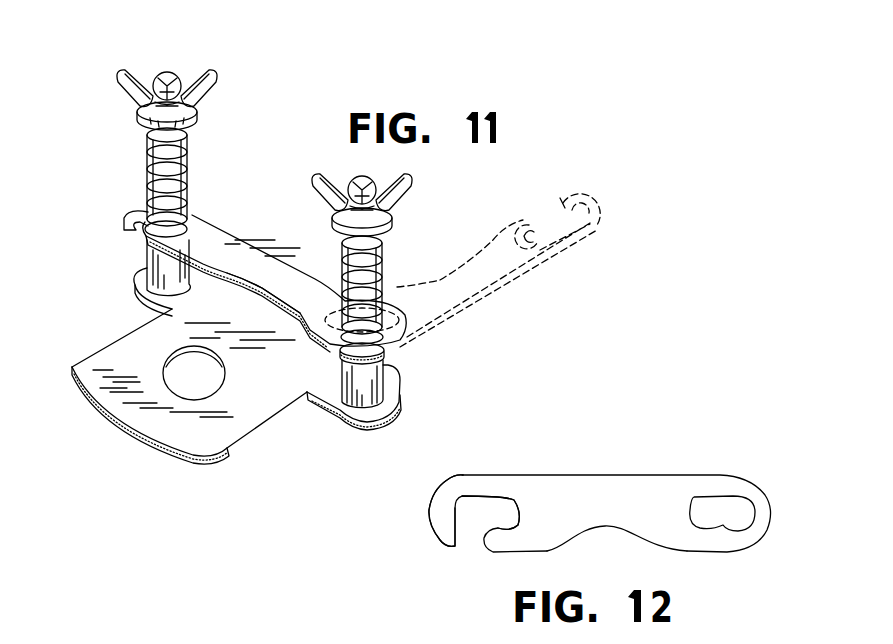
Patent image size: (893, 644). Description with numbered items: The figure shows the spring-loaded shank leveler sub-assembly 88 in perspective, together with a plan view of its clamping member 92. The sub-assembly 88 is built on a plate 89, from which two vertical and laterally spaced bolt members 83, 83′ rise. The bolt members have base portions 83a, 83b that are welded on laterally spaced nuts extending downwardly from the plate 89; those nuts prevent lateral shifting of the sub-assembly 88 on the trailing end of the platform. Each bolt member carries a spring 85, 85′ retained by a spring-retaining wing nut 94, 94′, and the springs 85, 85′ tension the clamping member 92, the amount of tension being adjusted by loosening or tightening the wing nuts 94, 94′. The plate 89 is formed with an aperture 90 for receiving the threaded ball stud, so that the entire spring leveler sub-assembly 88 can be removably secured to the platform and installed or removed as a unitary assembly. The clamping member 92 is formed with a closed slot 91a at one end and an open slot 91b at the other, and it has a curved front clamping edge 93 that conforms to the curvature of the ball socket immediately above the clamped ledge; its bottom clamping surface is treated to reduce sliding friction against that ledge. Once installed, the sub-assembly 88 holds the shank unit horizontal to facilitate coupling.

In FIG. 11, the bolt member 83 is at (365, 297).
In FIG. 11, the bolt member 83′ is at (165, 178).
In FIG. 11, the base portion of bolt member 83a is at (345, 372).
In FIG. 11, the base portion of bolt member 83b is at (152, 273).
In FIG. 11, the spring 85 is at (388, 257).
In FIG. 11, the spring 85′ is at (148, 140).
In FIG. 11, the spring leveler sub-assembly 88 is at (413, 343).
In FIG. 11, the plate 89 is at (248, 383).
In FIG. 11, the aperture 90 is at (172, 360).
In FIG. 12, the closed slot 91a is at (492, 497).
In FIG. 12, the open slot 91b is at (725, 497).
In FIG. 11, the clamping member 92 is at (259, 258).
In FIG. 12, the clamping member 92 is at (603, 490).
In FIG. 11, the curved front clamping edge 93 is at (262, 289).
In FIG. 12, the curved front clamping edge 93 is at (593, 528).
In FIG. 11, the wing nut 94 is at (385, 208).
In FIG. 11, the wing nut 94′ is at (197, 80).